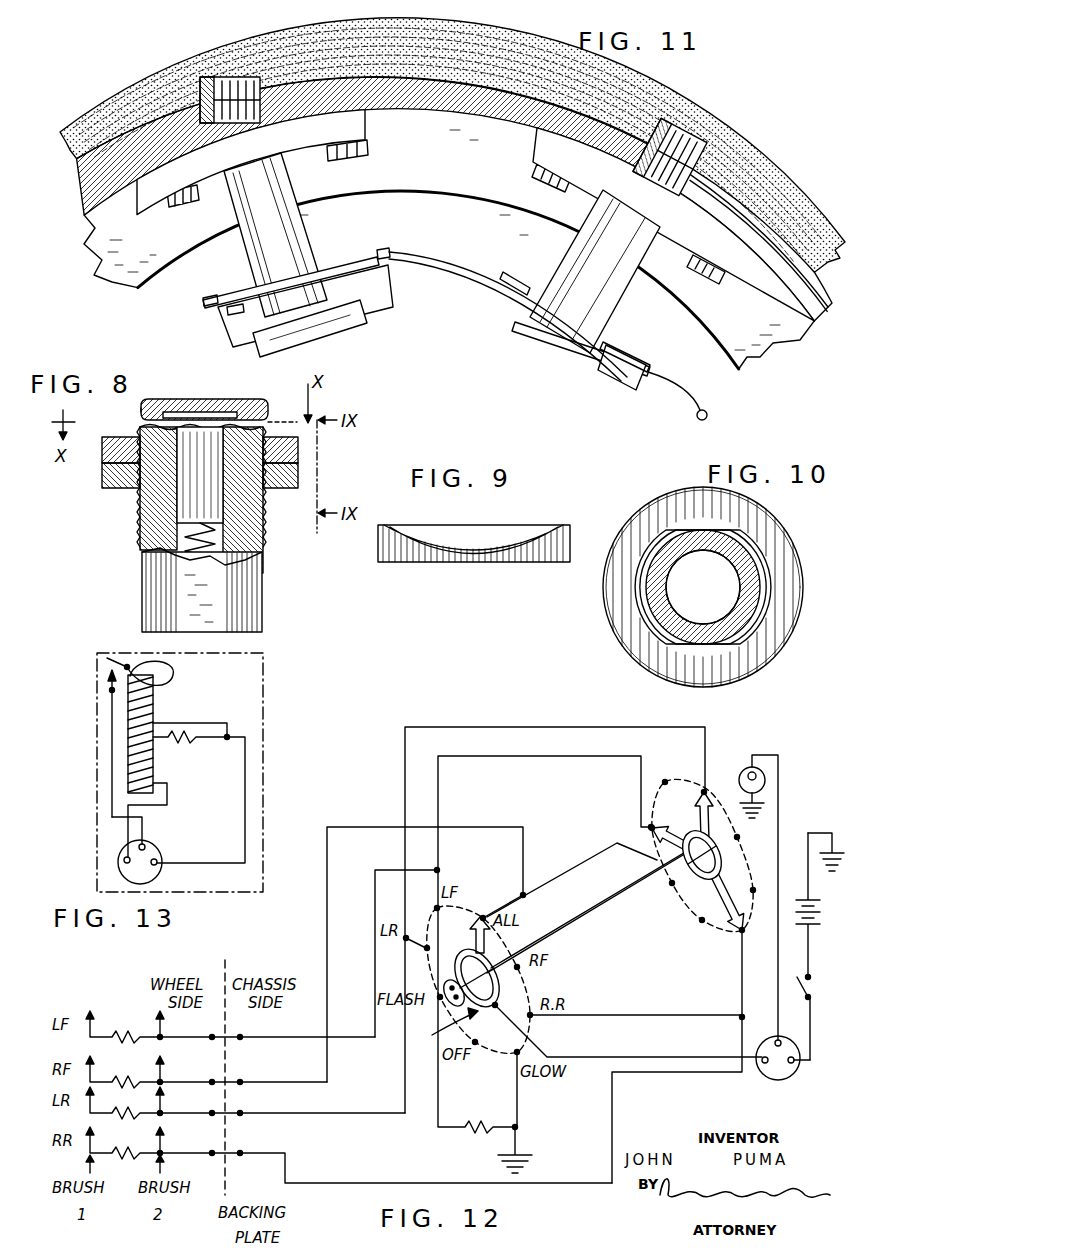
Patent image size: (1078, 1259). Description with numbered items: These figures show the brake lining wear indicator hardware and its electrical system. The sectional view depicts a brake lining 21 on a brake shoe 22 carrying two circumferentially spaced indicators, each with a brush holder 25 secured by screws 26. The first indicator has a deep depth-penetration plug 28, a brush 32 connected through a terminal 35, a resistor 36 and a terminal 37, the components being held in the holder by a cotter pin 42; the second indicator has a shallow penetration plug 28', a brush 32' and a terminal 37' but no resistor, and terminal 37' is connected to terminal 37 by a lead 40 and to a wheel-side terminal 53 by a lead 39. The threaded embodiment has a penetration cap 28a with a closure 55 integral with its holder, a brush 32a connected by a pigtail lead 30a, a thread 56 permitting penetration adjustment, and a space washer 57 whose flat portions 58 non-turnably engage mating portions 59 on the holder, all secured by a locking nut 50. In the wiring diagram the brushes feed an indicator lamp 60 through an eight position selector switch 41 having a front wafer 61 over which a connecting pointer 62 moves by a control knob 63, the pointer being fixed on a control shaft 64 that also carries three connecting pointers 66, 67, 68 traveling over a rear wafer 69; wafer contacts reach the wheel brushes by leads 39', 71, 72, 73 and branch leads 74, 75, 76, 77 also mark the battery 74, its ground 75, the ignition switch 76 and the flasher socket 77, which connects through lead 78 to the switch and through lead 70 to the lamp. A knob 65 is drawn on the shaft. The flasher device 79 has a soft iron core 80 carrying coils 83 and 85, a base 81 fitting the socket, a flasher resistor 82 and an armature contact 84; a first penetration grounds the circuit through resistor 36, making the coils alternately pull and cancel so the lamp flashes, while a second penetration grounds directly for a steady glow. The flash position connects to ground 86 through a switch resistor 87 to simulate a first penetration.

In FIG. 11, the brake lining 21 is at (828, 230).
In FIG. 11, the brake shoe 22 is at (818, 322).
In FIG. 11, the brush holder 25 is at (305, 245).
In FIG. 11, the screws 26 is at (178, 215).
In FIG. 11, the depth-penetration plug 28 is at (251, 162).
In FIG. 11, the shallow penetration plug 28' is at (673, 224).
In FIG. 8, the penetration cap 28a is at (142, 410).
In FIG. 8, the pigtail lead 30a is at (220, 545).
In FIG. 11, the brush 32 is at (212, 77).
In FIG. 12, the brush 32 is at (227, 1008).
In FIG. 11, the brush 32' is at (690, 146).
In FIG. 12, the brush 32' is at (144, 1019).
In FIG. 8, the brush 32a is at (215, 498).
In FIG. 11, the terminal 35 is at (222, 298).
In FIG. 11, the resistor 36 is at (312, 325).
In FIG. 12, the resistor 36 is at (112, 1030).
In FIG. 11, the terminal 37 is at (396, 240).
In FIG. 11, the terminal 37' is at (642, 355).
In FIG. 11, the lead 39 is at (695, 391).
In FIG. 12, the lead 39 is at (198, 1025).
In FIG. 12, the lead 39' is at (267, 1025).
In FIG. 11, the lead 40 is at (488, 275).
In FIG. 12, the selector switch 41 is at (444, 1027).
In FIG. 11, the cotter pin 42 is at (232, 314).
In FIG. 8, the locking nut 50 is at (298, 472).
In FIG. 11, the terminal 53 is at (697, 415).
In FIG. 8, the closure 55 is at (215, 398).
In FIG. 8, the thread 56 is at (140, 505).
In FIG. 8, the space washer 57 is at (283, 443).
In FIG. 9, the space washer 57 is at (540, 525).
In FIG. 10, the space washer 57 is at (783, 592).
In FIG. 10, the flat portions 58 is at (698, 605).
In FIG. 8, the mating portions 59 is at (215, 607).
In FIG. 10, the mating portions 59 is at (740, 535).
In FIG. 12, the indicator lamp 60 is at (745, 770).
In FIG. 12, the front wafer 61 is at (502, 1058).
In FIG. 12, the connecting pointer 62 is at (466, 937).
In FIG. 12, the control knob 63 is at (433, 982).
In FIG. 12, the control shaft 64 is at (616, 863).
In FIG. 12, the switch knob 65 is at (690, 895).
In FIG. 12, the connecting pointer 66 is at (660, 826).
In FIG. 12, the connecting pointer 67 is at (700, 795).
In FIG. 12, the connecting pointer 68 is at (728, 897).
In FIG. 12, the rear wafer 69 is at (753, 866).
In FIG. 12, the lead 70 is at (782, 803).
In FIG. 12, the lead 71 is at (286, 1080).
In FIG. 12, the lead 72 is at (256, 1116).
In FIG. 12, the lead 73 is at (263, 1153).
In FIG. 12, the battery 74 is at (205, 1048).
In FIG. 12, the ground 75 is at (205, 1085).
In FIG. 12, the ignition switch 76 is at (206, 1125).
In FIG. 12, the flasher socket 77 is at (212, 1155).
In FIG. 12, the lead 78 is at (622, 1042).
In FIG. 13, the flasher device 79 is at (270, 733).
In FIG. 13, the soft iron core 80 is at (128, 730).
In FIG. 13, the contact plug device 81 is at (162, 875).
In FIG. 13, the flasher resistor 82 is at (182, 745).
In FIG. 13, the coil 83 is at (170, 790).
In FIG. 13, the armature contact 84 is at (107, 660).
In FIG. 13, the coil 85 is at (153, 710).
In FIG. 12, the ground 86 is at (532, 1165).
In FIG. 12, the switch resistor 87 is at (486, 1122).